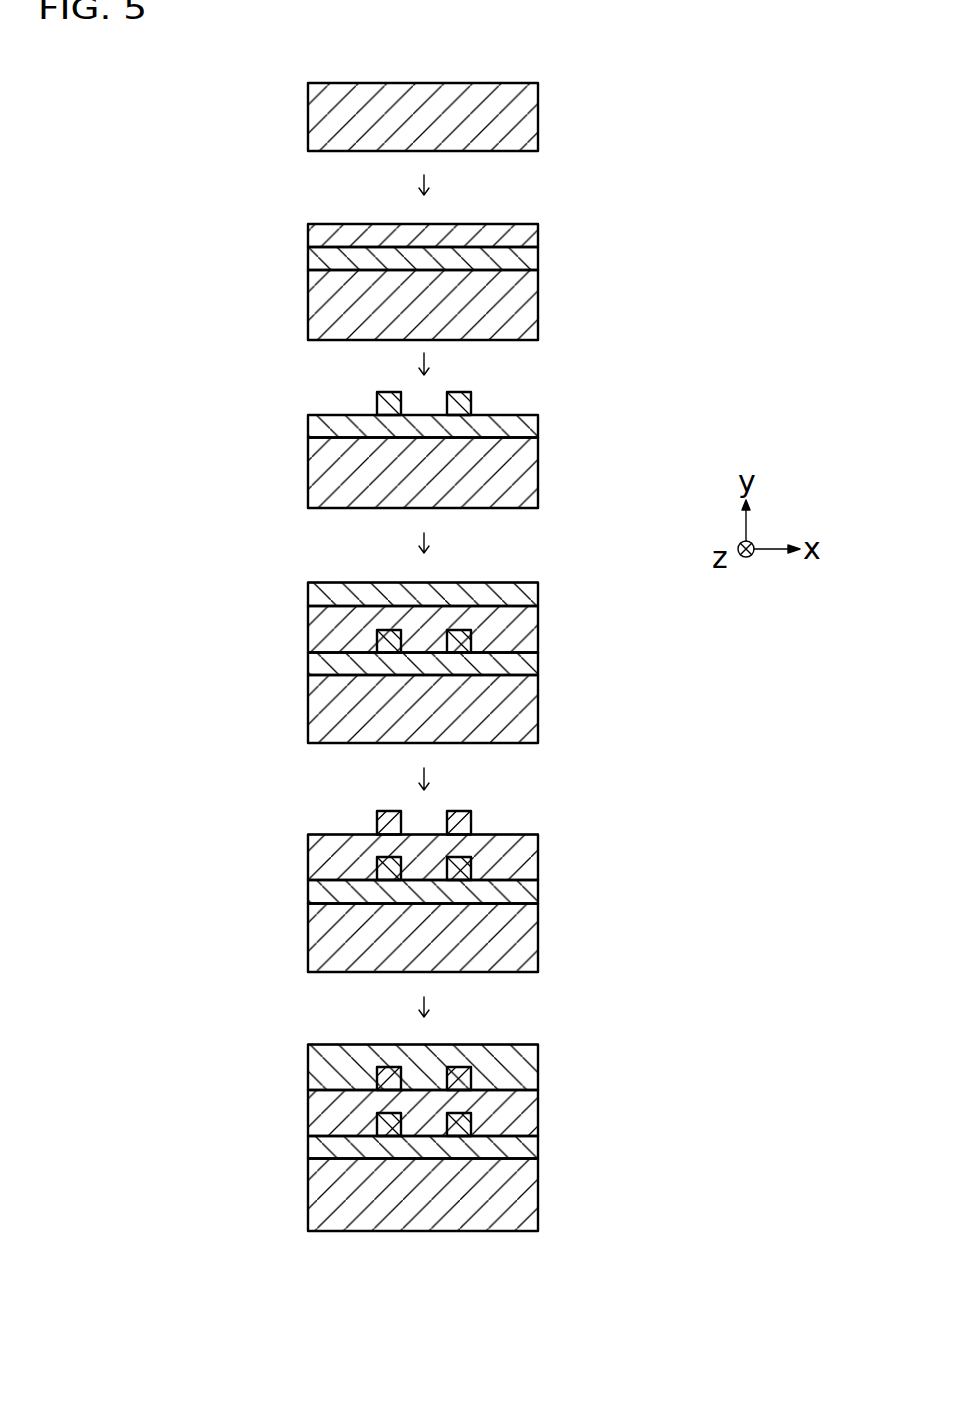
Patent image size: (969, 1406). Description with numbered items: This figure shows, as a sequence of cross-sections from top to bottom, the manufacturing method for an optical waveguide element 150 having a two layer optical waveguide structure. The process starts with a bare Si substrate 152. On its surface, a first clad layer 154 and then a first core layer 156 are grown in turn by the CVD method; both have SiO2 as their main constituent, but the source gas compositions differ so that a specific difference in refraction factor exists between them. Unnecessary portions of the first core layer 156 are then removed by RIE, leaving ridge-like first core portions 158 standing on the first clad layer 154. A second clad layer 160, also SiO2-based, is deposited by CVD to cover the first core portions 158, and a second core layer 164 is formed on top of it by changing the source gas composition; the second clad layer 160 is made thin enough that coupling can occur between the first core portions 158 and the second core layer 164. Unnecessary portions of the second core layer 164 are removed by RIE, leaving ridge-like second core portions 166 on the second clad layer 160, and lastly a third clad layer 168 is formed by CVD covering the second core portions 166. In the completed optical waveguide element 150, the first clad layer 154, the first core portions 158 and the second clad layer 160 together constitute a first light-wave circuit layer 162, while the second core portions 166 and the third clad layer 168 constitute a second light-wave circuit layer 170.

The optical waveguide element 150 is at (450, 1300).
The Si substrate 152 is at (530, 121).
The first clad layer 154 is at (530, 258).
The first core layer 156 is at (530, 235).
The first core portions 158 is at (465, 403).
The second clad layer 160 is at (528, 638).
The first light-wave circuit layer 162 is at (217, 1073).
The second core layer 164 is at (530, 595).
The second core portions 166 is at (467, 823).
The third clad layer 168 is at (522, 1058).
The second light-wave circuit layer 170 is at (642, 1029).